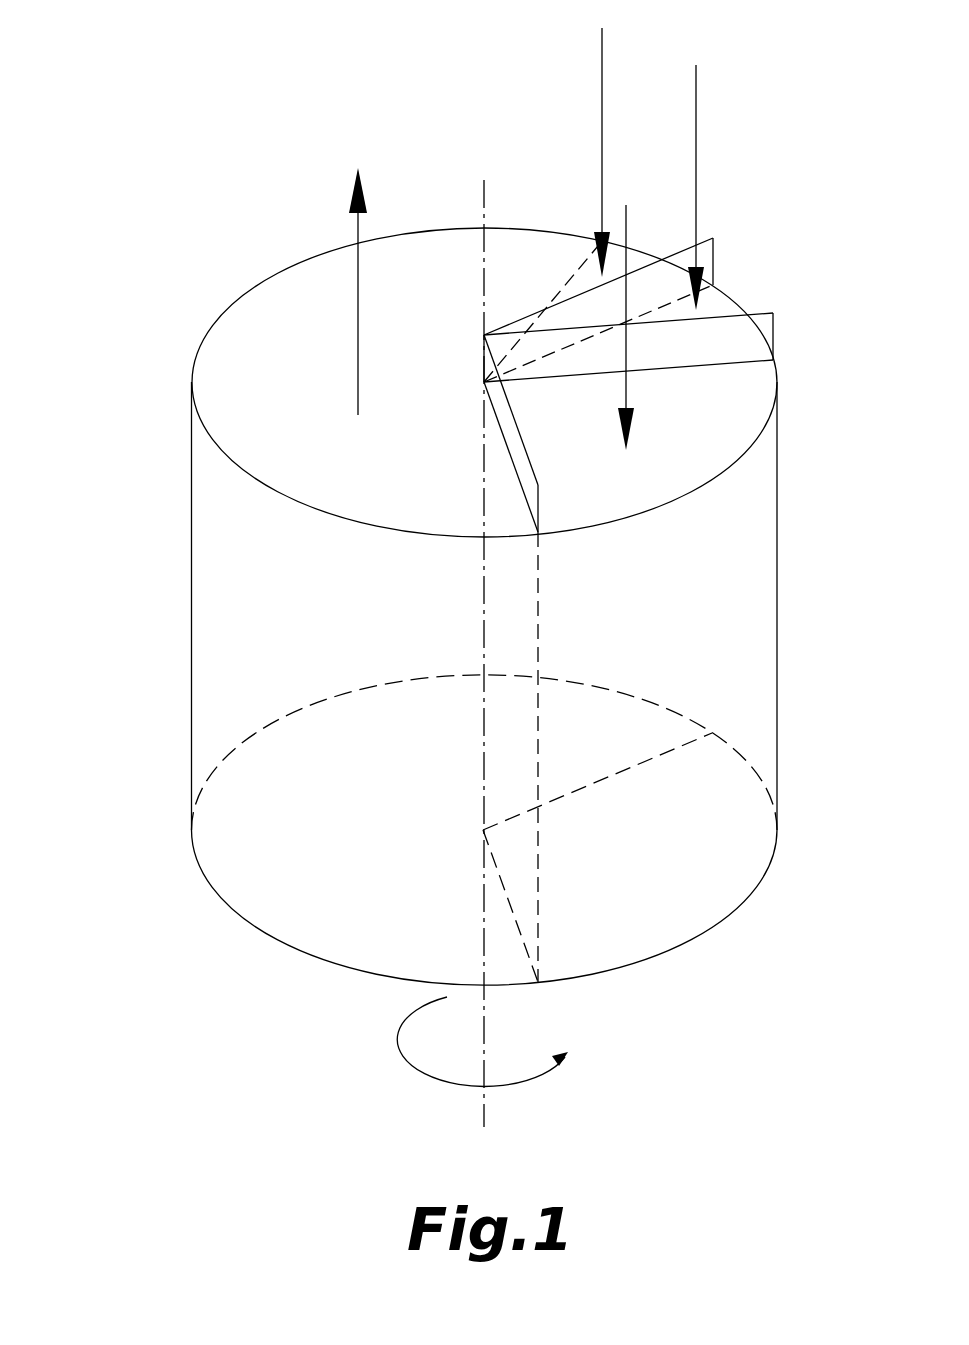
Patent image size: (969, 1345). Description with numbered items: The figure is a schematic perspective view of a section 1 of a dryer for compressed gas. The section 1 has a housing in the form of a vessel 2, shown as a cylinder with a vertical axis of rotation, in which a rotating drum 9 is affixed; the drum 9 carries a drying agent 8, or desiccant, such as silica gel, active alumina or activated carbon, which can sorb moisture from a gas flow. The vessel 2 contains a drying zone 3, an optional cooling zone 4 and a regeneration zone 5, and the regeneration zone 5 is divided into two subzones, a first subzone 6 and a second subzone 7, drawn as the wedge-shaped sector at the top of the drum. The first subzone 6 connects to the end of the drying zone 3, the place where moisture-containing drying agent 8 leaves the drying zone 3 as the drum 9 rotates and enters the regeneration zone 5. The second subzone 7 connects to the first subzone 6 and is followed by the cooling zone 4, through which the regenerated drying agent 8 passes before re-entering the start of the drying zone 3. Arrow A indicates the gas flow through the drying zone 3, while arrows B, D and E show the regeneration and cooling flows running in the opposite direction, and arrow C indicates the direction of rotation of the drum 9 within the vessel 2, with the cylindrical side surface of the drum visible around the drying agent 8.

The section of a dryer 1 is at (226, 125).
The vessel 2 is at (126, 543).
The drying zone 3 is at (296, 386).
The cooling zone 4 is at (638, 260).
The regeneration zone 5 is at (736, 314).
The first subzone 6 is at (753, 343).
The second subzone 7 is at (722, 317).
The drying agent 8 is at (677, 643).
The drum 9 is at (797, 554).